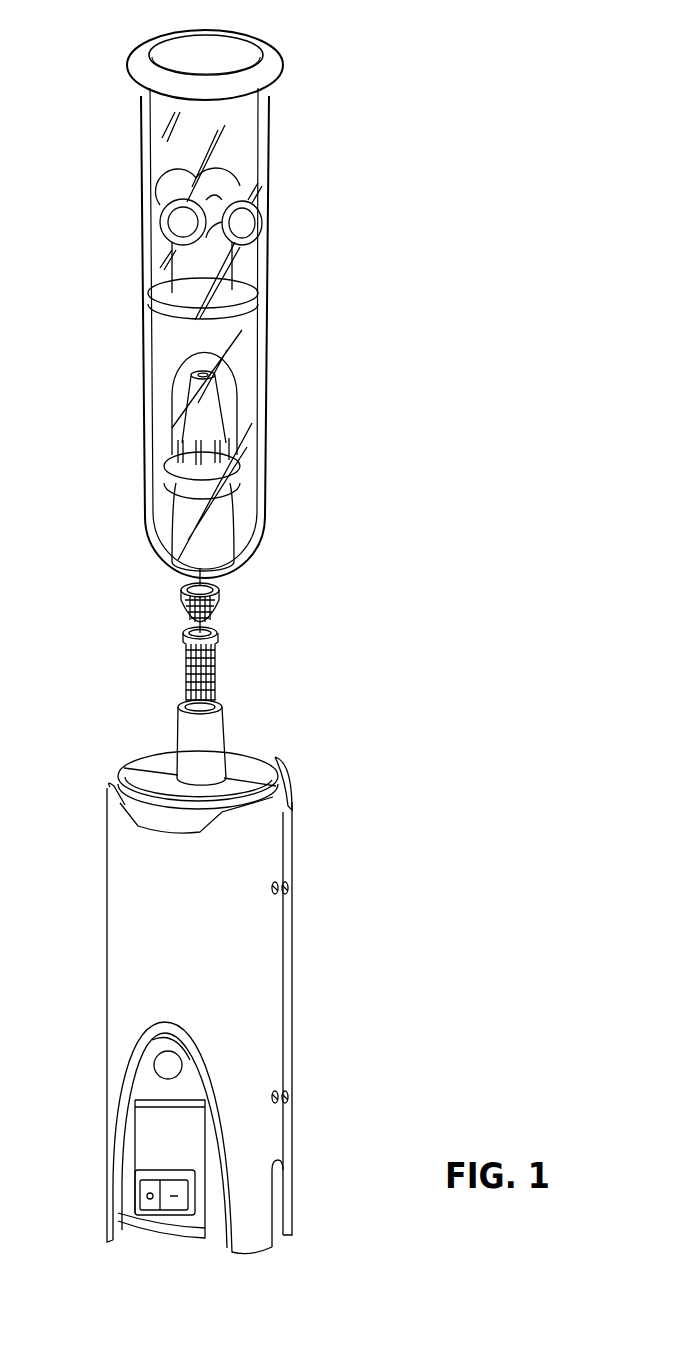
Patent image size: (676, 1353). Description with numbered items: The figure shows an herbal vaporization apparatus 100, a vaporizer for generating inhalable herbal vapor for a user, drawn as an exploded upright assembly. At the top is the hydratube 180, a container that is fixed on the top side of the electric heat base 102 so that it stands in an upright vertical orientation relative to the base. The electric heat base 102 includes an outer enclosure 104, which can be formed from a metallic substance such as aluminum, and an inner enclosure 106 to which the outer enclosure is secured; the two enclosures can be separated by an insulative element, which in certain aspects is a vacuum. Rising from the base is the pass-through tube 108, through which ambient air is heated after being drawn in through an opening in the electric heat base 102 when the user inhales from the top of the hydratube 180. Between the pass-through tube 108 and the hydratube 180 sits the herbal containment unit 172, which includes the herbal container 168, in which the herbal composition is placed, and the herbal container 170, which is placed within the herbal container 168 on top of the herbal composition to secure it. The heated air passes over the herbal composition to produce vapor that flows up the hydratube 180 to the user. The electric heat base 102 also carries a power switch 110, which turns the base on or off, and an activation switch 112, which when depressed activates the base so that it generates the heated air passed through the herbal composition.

The herbal vaporization apparatus 100 is at (355, 768).
The electric heat base 102 is at (292, 952).
The outer enclosure 104 is at (292, 1147).
The inner enclosure 106 is at (252, 765).
The pass-through tube 108 is at (178, 736).
The power switch 110 is at (170, 1215).
The activation switch 112 is at (158, 1066).
The herbal container 168 is at (196, 665).
The herbal container 170 is at (183, 610).
The herbal containment unit 172 is at (233, 585).
The hydratube 180 is at (266, 350).